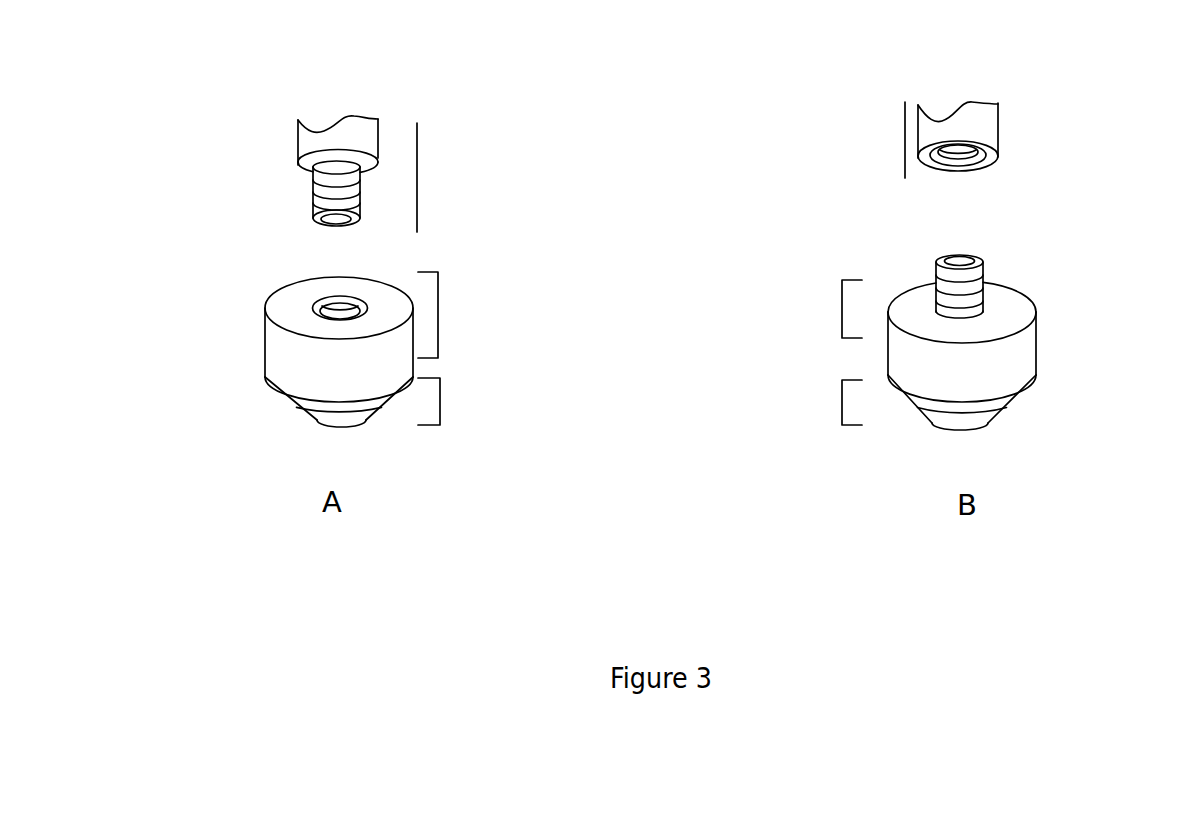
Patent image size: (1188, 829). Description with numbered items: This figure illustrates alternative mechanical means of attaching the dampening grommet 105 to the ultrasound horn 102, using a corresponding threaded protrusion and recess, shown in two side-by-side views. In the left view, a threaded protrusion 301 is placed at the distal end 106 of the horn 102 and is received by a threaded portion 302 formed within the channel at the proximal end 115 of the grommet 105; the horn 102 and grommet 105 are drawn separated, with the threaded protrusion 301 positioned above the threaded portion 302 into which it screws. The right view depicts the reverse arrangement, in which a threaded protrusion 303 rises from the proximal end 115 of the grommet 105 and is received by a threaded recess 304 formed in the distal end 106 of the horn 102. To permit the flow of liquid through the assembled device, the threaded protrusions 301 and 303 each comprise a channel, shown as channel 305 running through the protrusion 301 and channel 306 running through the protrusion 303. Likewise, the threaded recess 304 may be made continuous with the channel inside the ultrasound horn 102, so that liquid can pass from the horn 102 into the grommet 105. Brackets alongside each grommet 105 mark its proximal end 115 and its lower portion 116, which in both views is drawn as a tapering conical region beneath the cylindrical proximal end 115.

The ultrasound horn 102 is at (370, 130).
The dampening grommet 105 is at (285, 357).
The distal end of horn 106 is at (417, 165).
The proximal end of grommet 115 is at (438, 315).
The lower conical portion of body 116 is at (440, 402).
The threaded protrusion 301 is at (322, 198).
The threaded portion 302 is at (345, 310).
The threaded protrusion 303 is at (945, 273).
The threaded recess 304 is at (957, 162).
The channel 305 is at (335, 220).
The channel 306 is at (957, 261).